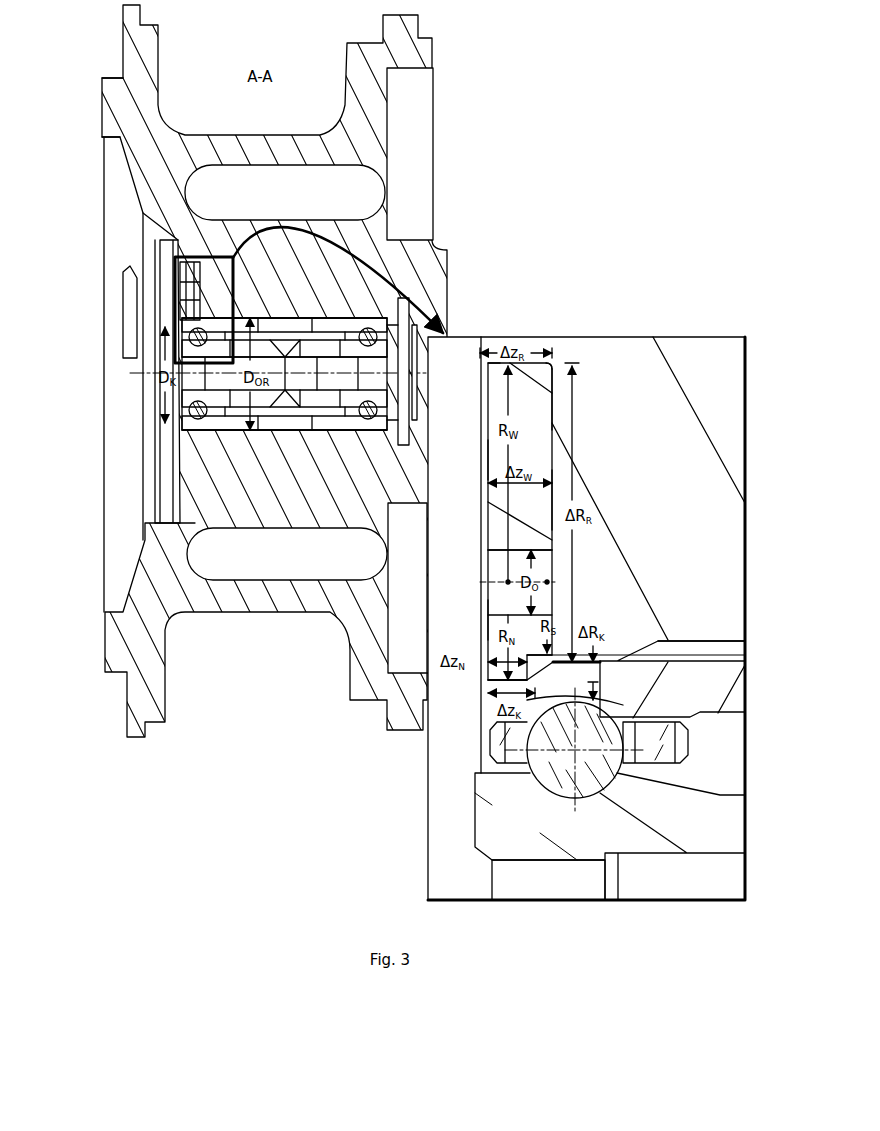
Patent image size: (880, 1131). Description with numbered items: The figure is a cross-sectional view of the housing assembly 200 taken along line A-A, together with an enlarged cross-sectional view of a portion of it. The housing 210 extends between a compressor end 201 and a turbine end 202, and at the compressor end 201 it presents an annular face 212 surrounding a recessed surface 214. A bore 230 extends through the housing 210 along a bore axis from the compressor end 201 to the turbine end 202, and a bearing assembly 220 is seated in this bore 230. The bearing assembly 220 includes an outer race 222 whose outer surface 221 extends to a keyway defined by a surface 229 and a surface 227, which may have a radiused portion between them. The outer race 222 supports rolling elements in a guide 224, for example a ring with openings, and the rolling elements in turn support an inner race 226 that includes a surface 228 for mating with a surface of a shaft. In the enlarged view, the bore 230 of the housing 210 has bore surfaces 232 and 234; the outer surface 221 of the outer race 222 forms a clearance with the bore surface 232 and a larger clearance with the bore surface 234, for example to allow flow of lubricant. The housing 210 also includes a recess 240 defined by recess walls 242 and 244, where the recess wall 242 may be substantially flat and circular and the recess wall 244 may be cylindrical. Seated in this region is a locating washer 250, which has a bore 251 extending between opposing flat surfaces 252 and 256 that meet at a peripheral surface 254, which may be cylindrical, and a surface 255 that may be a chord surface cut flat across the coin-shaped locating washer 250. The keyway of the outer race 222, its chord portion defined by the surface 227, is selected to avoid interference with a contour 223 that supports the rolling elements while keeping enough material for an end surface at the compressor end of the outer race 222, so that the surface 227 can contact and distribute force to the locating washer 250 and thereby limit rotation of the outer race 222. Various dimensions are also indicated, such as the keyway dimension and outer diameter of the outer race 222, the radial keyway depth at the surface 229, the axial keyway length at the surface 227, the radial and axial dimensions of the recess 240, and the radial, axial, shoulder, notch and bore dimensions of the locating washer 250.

The housing assembly 200 is at (525, 40).
The compressor end 201 is at (90, 57).
The turbine end 202 is at (470, 82).
The housing 210 is at (395, 370).
The annular face 212 is at (100, 120).
The recessed surface 214 is at (180, 445).
The bearing assembly 220 is at (385, 392).
The outer surface 221 is at (720, 658).
The outer race 222 is at (672, 689).
The contour 223 is at (603, 703).
The guide 224 is at (681, 756).
The inner race 226 is at (610, 836).
The surface 227 is at (535, 692).
The surface 228 is at (548, 880).
The surface 229 is at (538, 673).
The bore 230 is at (262, 303).
The bore surface 232 is at (607, 660).
The bore surface 234 is at (688, 638).
The recess 240 is at (180, 264).
The recess wall 242 is at (553, 405).
The recess wall 244 is at (552, 363).
The locating washer 250 is at (541, 450).
The bore 251 is at (487, 552).
The flat surface 252 is at (553, 497).
The peripheral surface 254 is at (487, 371).
The surface 255 is at (487, 680).
The flat surface 256 is at (487, 462).